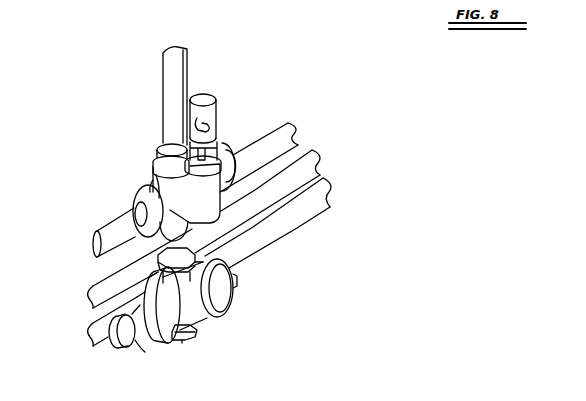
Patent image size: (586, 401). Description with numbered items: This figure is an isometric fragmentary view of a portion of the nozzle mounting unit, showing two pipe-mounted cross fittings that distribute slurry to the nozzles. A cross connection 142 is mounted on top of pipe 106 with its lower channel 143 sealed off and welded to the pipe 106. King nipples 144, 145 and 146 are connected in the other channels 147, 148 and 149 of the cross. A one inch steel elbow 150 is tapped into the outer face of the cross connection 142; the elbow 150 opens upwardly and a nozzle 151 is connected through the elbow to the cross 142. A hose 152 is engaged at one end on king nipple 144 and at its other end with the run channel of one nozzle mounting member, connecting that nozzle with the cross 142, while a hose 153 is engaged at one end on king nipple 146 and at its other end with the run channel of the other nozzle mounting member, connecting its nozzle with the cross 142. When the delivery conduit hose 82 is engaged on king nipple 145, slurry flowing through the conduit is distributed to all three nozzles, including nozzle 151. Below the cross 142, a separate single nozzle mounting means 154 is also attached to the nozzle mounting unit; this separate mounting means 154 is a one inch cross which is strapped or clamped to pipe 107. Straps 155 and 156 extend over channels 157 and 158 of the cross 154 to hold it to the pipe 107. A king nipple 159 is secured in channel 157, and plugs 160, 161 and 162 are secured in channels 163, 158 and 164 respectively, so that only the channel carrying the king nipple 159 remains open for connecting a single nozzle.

The delivery conduit hose 82 is at (172, 73).
The pipe 106 is at (308, 170).
The pipe 107 is at (320, 198).
The cross connection 142 is at (146, 172).
The lower channel 143 is at (228, 249).
The king nipple 144 is at (137, 212).
The king nipple 145 is at (170, 153).
The king nipple 146 is at (238, 170).
The channel 147 is at (150, 184).
The channel 148 is at (161, 166).
The channel 149 is at (221, 151).
The steel elbow 150 is at (213, 207).
The nozzle 151 is at (215, 112).
The hose 152 is at (93, 240).
The hose 153 is at (284, 139).
The single nozzle mounting means 154 is at (182, 347).
The strap 155 is at (92, 323).
The strap 156 is at (221, 298).
The channel 157 is at (150, 345).
The channel 158 is at (224, 294).
The king nipple 159 is at (118, 340).
The plug 160 is at (182, 256).
The plug 161 is at (238, 280).
The plug 162 is at (195, 338).
The channel 163 is at (92, 286).
The channel 164 is at (197, 328).